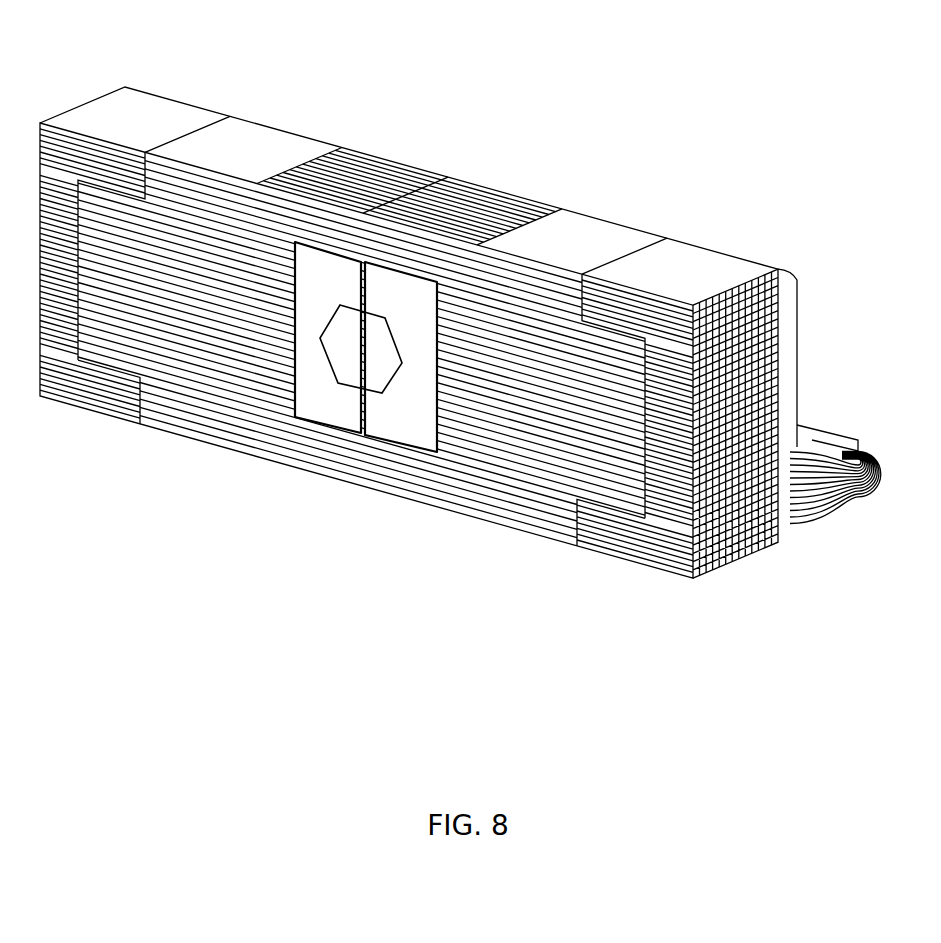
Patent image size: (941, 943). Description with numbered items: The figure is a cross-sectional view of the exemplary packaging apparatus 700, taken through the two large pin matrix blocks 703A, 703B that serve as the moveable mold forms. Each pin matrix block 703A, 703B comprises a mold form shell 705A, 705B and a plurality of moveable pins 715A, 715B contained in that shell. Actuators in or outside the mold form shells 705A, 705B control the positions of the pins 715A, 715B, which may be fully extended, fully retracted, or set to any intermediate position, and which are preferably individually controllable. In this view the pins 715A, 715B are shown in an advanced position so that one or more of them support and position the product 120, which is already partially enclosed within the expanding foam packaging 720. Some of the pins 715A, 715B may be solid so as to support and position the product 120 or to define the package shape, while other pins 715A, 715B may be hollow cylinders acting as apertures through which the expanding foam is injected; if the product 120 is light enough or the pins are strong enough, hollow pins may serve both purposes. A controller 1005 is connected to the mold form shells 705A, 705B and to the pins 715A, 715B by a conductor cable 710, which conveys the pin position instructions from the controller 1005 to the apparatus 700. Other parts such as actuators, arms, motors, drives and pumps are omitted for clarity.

The apparatus 700 is at (490, 339).
The pin matrix block 703A is at (606, 152).
The pin matrix block 703B is at (353, 97).
The mold form shell 705A is at (725, 252).
The mold form shell 705B is at (196, 106).
The pins 715A is at (478, 522).
The pins 715B is at (170, 434).
The expanding foam packaging 720 is at (359, 391).
The product 120 is at (350, 361).
The controller 1005 is at (851, 434).
The conductor cable 710 is at (866, 492).